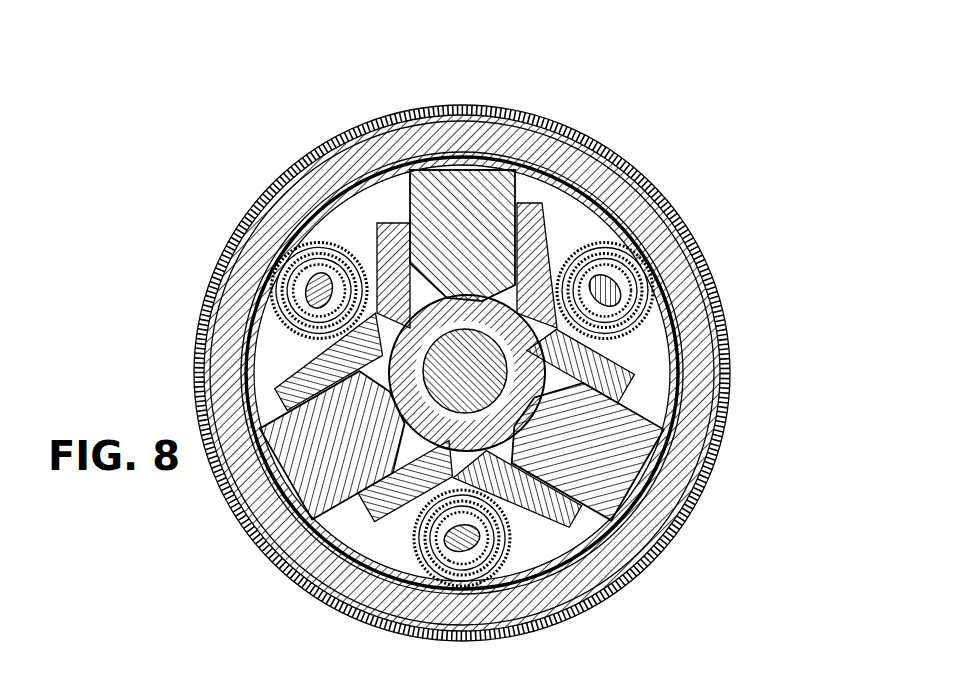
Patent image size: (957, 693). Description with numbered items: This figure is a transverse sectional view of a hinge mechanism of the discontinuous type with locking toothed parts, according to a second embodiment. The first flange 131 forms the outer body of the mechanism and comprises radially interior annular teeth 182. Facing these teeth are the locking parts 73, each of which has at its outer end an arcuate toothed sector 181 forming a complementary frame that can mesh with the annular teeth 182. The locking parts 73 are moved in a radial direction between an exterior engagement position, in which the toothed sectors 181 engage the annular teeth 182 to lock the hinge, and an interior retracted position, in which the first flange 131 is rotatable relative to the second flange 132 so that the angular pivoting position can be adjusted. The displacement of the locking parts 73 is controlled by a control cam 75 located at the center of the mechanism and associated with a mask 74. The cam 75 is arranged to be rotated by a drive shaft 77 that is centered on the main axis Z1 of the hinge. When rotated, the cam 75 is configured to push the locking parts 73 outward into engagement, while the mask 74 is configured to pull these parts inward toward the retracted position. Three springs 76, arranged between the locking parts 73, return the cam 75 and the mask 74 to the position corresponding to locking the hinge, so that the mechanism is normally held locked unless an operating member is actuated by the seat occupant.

The locking parts 73 is at (437, 185).
The mask 74 is at (650, 192).
The control cam 75 is at (548, 353).
The springs 76 is at (658, 268).
The drive shaft 77 is at (432, 372).
The first flange 131 is at (645, 528).
The second flange 132 is at (607, 153).
The arcuate toothed sector 181 is at (493, 153).
The radially interior annular teeth 182 is at (543, 135).
The main axis Z1 is at (395, 267).